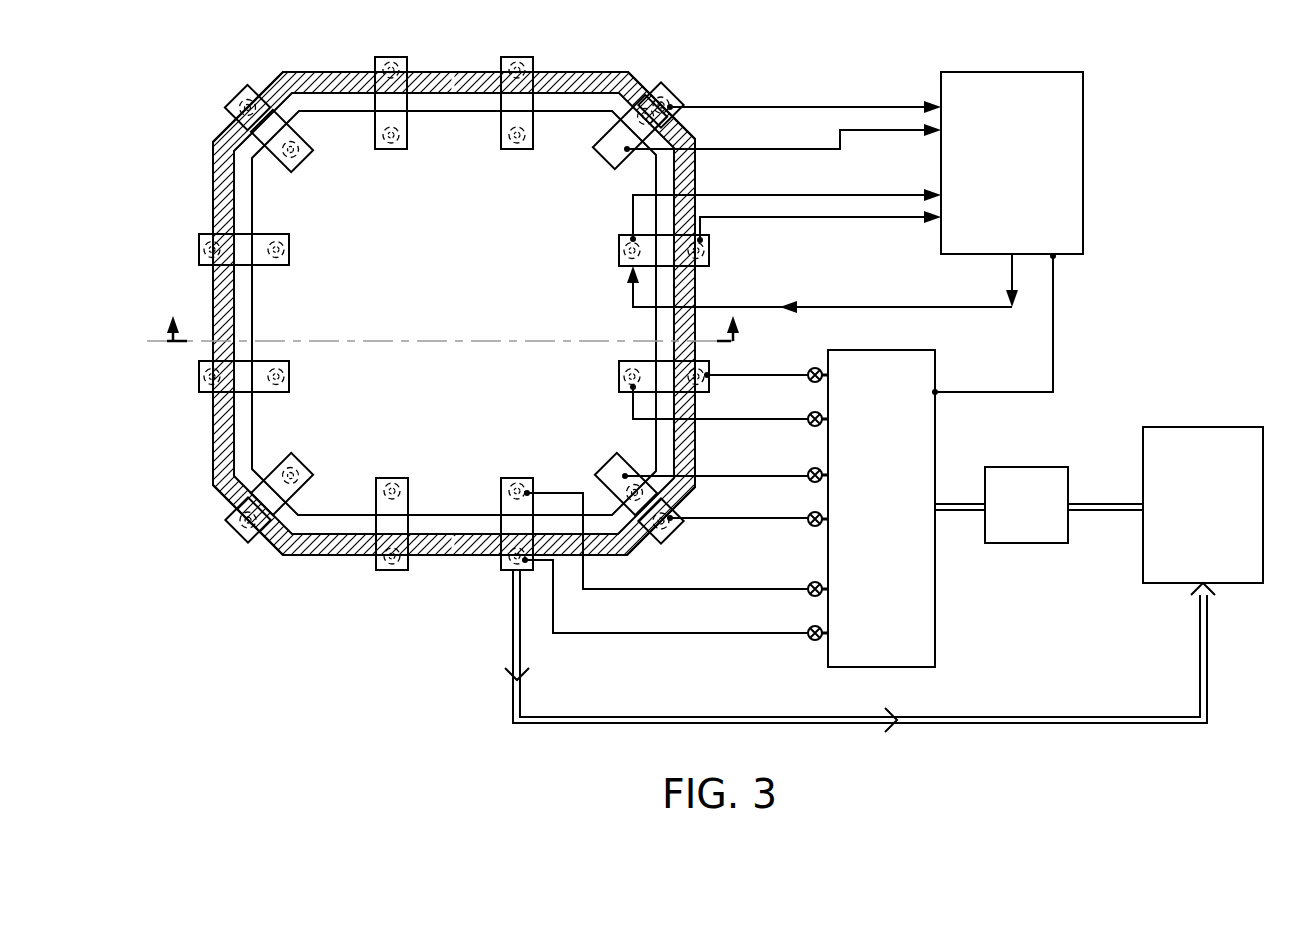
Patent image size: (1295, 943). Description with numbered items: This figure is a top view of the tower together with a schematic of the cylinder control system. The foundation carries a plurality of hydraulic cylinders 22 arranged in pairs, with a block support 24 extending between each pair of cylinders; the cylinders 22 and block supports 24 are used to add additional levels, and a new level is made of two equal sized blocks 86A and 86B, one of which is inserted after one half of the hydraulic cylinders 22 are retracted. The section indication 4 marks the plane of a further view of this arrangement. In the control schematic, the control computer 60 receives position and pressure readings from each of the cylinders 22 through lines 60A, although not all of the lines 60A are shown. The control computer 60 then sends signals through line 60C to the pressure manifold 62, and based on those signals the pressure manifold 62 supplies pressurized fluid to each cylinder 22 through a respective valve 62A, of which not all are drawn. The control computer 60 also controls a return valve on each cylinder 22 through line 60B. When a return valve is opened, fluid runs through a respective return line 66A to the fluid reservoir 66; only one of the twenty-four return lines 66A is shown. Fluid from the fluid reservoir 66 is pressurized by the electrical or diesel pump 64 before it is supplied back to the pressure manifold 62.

The section line 4- 4 is at (454, 337).
The hydraulic cylinders 22 is at (670, 107).
The block supports 24 is at (674, 140).
The control computer 60 is at (1012, 163).
The lines 60A is at (783, 151).
The line 60B is at (977, 307).
The line 60C is at (1053, 348).
The pressure manifold 62 is at (881, 508).
The valve 62A is at (811, 469).
The electrical or diesel pump 64 is at (1039, 505).
The fluid reservoir 66 is at (1203, 505).
The return line 66A is at (1018, 724).
The block 86A is at (695, 180).
The block 86B is at (213, 160).